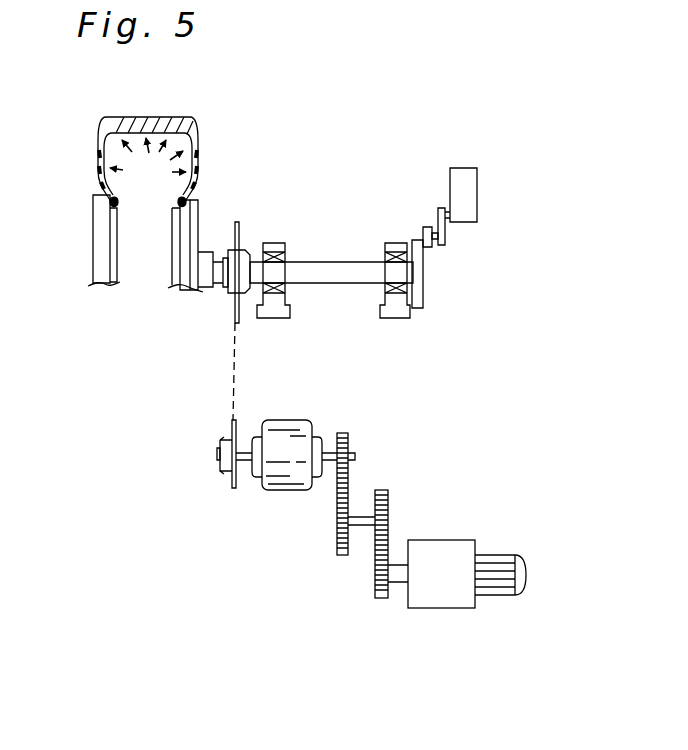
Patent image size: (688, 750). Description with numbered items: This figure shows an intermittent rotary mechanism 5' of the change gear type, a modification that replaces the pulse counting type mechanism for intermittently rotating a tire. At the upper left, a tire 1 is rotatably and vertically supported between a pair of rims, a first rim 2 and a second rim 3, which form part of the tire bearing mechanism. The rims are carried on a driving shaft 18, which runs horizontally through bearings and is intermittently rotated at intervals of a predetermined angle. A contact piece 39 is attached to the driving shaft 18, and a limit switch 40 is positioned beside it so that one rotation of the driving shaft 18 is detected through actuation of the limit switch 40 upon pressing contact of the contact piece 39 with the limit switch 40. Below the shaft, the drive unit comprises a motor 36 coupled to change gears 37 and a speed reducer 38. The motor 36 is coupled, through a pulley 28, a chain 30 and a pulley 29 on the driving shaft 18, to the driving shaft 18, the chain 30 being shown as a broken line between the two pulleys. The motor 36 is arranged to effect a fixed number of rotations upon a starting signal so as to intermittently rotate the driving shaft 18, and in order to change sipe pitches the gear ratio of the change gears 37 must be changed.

The tire 1 is at (191, 134).
The first rim 2 is at (190, 212).
The second rim 3 is at (98, 228).
The pulley 29 is at (237, 222).
The driving shaft 18 is at (331, 268).
The contact piece 39 is at (446, 236).
The limit switch 40 is at (477, 190).
The chain 30 is at (237, 378).
The intermittent rotary mechanism 5' is at (424, 449).
The pulley 28 is at (232, 490).
The speed reducer 38 is at (287, 490).
The change gears 37 is at (388, 492).
The motor 36 is at (447, 608).